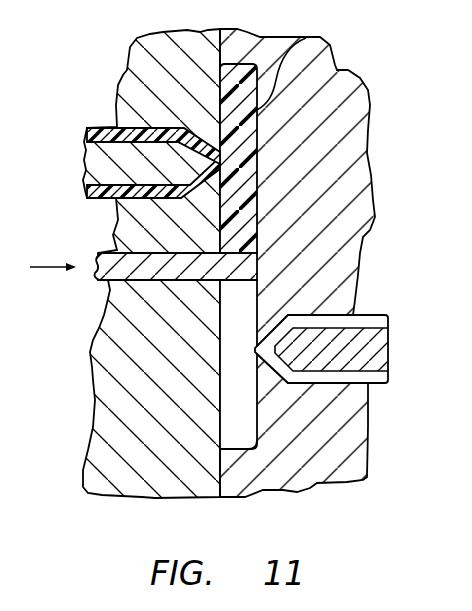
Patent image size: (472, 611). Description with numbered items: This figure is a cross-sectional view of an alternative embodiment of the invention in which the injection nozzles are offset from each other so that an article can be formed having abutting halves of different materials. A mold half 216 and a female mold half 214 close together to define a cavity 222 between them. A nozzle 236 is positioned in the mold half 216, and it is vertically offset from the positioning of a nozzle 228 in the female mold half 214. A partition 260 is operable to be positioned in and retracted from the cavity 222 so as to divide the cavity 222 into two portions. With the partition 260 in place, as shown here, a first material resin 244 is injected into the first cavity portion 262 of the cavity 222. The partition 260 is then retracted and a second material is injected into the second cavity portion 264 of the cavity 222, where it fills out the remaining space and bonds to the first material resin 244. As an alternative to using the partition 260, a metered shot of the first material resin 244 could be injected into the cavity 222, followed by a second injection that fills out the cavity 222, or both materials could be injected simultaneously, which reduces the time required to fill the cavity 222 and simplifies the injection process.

The female mold half 214 is at (350, 445).
The mold half 216 is at (107, 426).
The cavity 222 is at (243, 440).
The nozzle 228 is at (385, 340).
The nozzle 236 is at (88, 172).
The first material resin 244 is at (85, 128).
The partition 260 is at (98, 279).
The first cavity portion 262 is at (310, 39).
The second cavity portion 264 is at (258, 432).